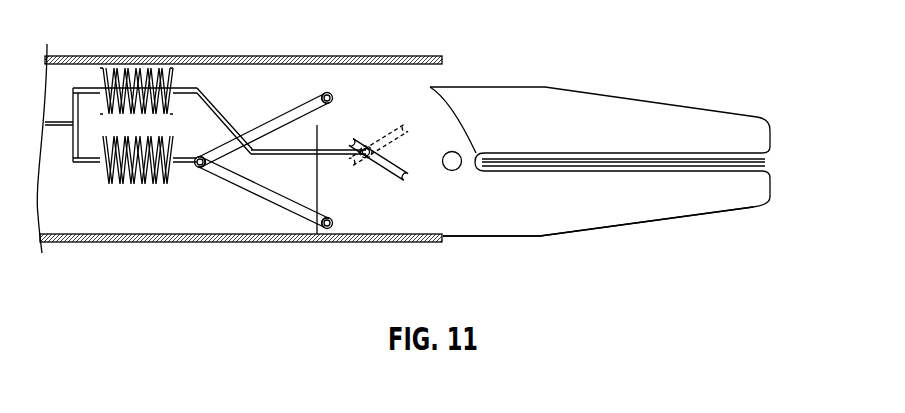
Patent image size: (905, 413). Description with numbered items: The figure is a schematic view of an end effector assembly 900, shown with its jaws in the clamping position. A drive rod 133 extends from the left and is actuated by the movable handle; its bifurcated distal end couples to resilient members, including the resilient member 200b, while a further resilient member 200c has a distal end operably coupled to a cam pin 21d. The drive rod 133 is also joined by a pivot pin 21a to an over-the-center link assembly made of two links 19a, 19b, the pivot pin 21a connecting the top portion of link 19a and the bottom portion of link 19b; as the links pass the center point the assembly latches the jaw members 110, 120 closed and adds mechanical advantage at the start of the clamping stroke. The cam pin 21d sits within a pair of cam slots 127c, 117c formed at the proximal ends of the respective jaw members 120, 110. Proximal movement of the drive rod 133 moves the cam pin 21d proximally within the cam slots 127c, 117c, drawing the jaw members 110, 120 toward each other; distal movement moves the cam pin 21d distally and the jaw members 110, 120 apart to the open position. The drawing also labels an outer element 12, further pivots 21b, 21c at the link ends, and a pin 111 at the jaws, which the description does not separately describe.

The shaft housing wall 12 is at (223, 55).
The drive rod 133 is at (60, 126).
The resilient member 200c is at (137, 57).
The resilient member 200b is at (131, 186).
The link 19b is at (273, 110).
The link 19a is at (257, 197).
The pivot pin 21a is at (197, 167).
The pivot 21b is at (326, 93).
The pivot 21c is at (327, 228).
The cam pin 21d is at (366, 148).
The cam slot 117c is at (404, 183).
The cam slot 127c is at (402, 120).
The jaw member 120 is at (770, 138).
The jaw member 110 is at (770, 183).
The jaw pivot pin 111 is at (452, 151).
The end effector assembly 900 is at (673, 58).